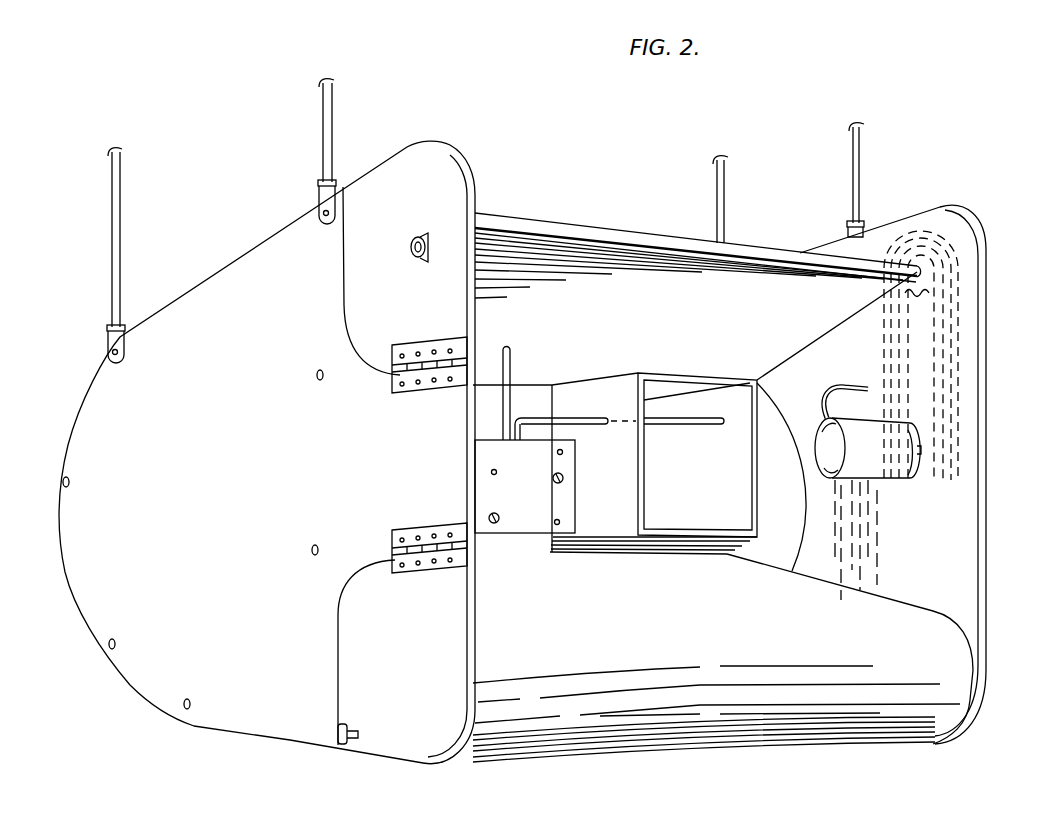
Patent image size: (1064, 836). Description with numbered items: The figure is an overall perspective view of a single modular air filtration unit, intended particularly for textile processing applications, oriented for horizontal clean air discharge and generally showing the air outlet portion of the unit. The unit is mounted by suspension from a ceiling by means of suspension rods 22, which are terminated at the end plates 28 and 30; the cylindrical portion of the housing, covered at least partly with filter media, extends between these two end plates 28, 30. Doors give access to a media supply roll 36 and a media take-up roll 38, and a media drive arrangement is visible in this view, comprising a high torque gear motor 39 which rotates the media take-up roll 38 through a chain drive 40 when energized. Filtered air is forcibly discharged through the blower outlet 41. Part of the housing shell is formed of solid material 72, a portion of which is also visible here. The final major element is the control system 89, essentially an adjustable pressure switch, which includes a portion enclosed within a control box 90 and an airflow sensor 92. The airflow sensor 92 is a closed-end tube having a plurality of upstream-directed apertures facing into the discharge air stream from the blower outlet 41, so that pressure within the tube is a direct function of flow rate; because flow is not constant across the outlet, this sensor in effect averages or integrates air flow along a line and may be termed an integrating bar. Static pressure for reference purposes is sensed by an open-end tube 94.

The suspension rods 22 is at (113, 238).
The end plate 28 is at (960, 588).
The end plate 30 is at (202, 433).
The media supply roll 36 is at (756, 762).
The media take-up roll 38 is at (642, 211).
The high torque gear motor 39 is at (880, 462).
The chain drive 40 is at (970, 399).
The blower outlet 41 is at (752, 479).
The solid material 72 is at (764, 509).
The control system 89 is at (608, 346).
The control box 90 is at (528, 512).
The airflow sensor 92 is at (683, 418).
The open-end tube 94 is at (511, 363).